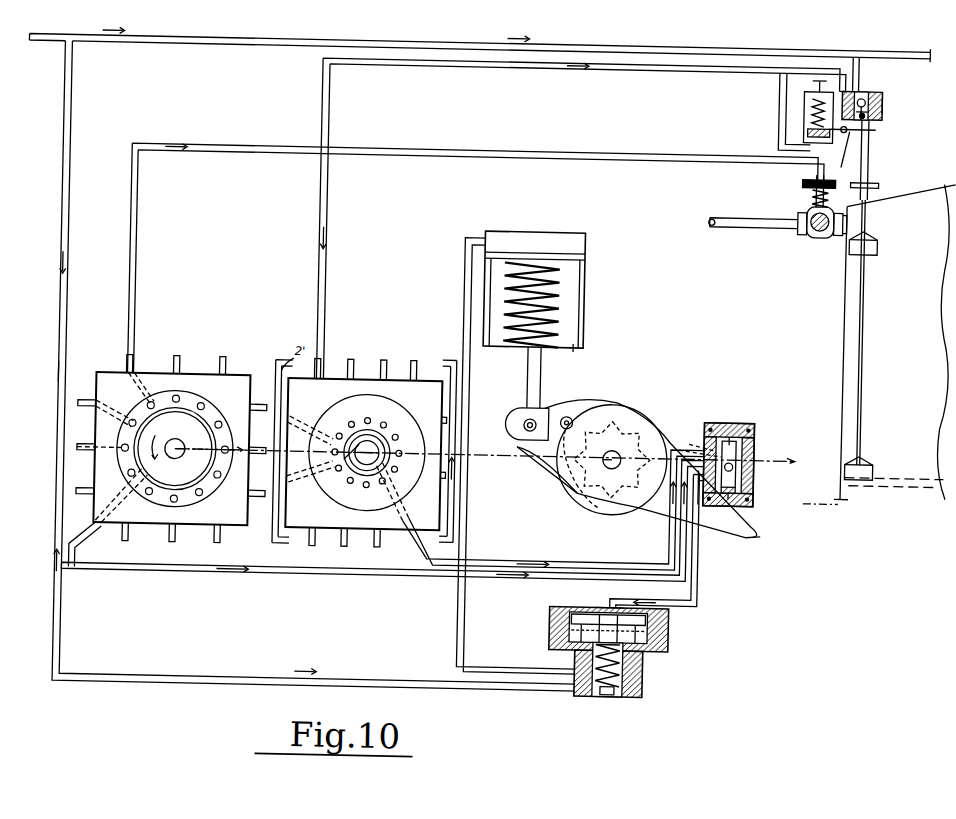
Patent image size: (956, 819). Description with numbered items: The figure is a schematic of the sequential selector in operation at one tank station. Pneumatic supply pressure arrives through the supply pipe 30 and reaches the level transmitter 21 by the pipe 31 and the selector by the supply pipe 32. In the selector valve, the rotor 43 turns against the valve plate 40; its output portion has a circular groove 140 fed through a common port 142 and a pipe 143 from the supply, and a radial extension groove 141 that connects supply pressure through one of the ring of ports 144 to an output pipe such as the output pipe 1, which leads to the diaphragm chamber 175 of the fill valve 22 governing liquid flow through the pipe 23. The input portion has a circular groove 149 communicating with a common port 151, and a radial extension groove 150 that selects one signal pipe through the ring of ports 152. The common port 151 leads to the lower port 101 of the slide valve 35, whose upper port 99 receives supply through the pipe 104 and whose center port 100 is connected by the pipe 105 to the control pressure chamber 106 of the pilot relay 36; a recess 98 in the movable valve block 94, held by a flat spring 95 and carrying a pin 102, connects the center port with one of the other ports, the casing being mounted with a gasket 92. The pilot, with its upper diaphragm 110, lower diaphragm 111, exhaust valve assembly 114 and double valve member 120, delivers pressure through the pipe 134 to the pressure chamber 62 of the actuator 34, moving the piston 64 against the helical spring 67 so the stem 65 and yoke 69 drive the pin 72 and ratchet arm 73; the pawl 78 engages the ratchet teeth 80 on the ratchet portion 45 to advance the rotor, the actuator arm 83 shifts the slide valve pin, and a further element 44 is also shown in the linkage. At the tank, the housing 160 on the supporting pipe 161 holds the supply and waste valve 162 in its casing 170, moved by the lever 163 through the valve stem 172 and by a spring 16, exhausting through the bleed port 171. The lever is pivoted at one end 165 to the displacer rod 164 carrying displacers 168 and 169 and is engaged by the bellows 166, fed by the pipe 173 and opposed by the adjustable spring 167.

The supply pipe 30 is at (708, 44).
The pipe 31 is at (854, 58).
The output pipe 1 is at (338, 302).
The supply pipe 32 is at (57, 382).
The valve plate 40 is at (429, 380).
The circular groove 140 is at (186, 416).
The radial extension groove 141 is at (148, 417).
The ring of ports 144 is at (218, 482).
The common port 142 is at (128, 534).
The pipe 143 is at (70, 548).
The radial extension groove 150 is at (360, 439).
The ring of ports 152 is at (398, 438).
The circular groove 149 is at (360, 462).
The common port 151 is at (399, 548).
The pipe 104 is at (675, 516).
The pipe 134 is at (463, 642).
The pressure chamber 62 is at (528, 234).
The piston 64 is at (585, 254).
The actuator 34 is at (595, 297).
The helical spring 67 is at (562, 318).
The stem 65 is at (540, 373).
The yoke 69 is at (520, 414).
The pin 72 is at (524, 427).
The lever 44 is at (608, 402).
The ratchet arm 73 is at (536, 452).
The rotor 43 is at (638, 403).
The ratchet portion 45 is at (644, 428).
The pawl 78 is at (558, 478).
The ratchet teeth 80 is at (596, 504).
The actuator arm 83 is at (740, 529).
The lower port 101 is at (700, 510).
The slide valve 35 is at (741, 417).
The flat spring 95 is at (738, 440).
The gasket 92 is at (734, 461).
The pin 102 is at (738, 480).
The recess 98 is at (731, 498).
The movable valve block 94 is at (729, 418).
The upper port 99 is at (692, 439).
The center port 100 is at (680, 446).
The pipe 105 is at (702, 596).
The pilot relay 36 is at (648, 708).
The upper diaphragm 110 is at (576, 618).
The lower diaphragm 111 is at (586, 640).
The control pressure chamber 106 is at (604, 610).
The exhaust valve assembly 114 is at (600, 662).
The double valve member 120 is at (610, 690).
The spring 16 is at (845, 76).
The housing 160 is at (876, 96).
The casing 170 is at (876, 94).
The supply and waste valve 162 is at (860, 96).
The level transmitter 21 is at (886, 115).
The bleed port 171 is at (858, 105).
The pivot end 165 is at (858, 110).
The supporting pipe 161 is at (866, 154).
The pipe 173 is at (772, 82).
The adjustable spring 167 is at (804, 108).
The bellows 166 is at (802, 128).
The lever 163 is at (842, 124).
The valve stem 172 is at (845, 156).
The diaphragm chamber 175 is at (802, 179).
The fill valve 22 is at (810, 234).
The pipe 23 is at (707, 224).
The displacer rod 164 is at (857, 326).
The displacer 168 is at (872, 246).
The displacer 169 is at (864, 454).